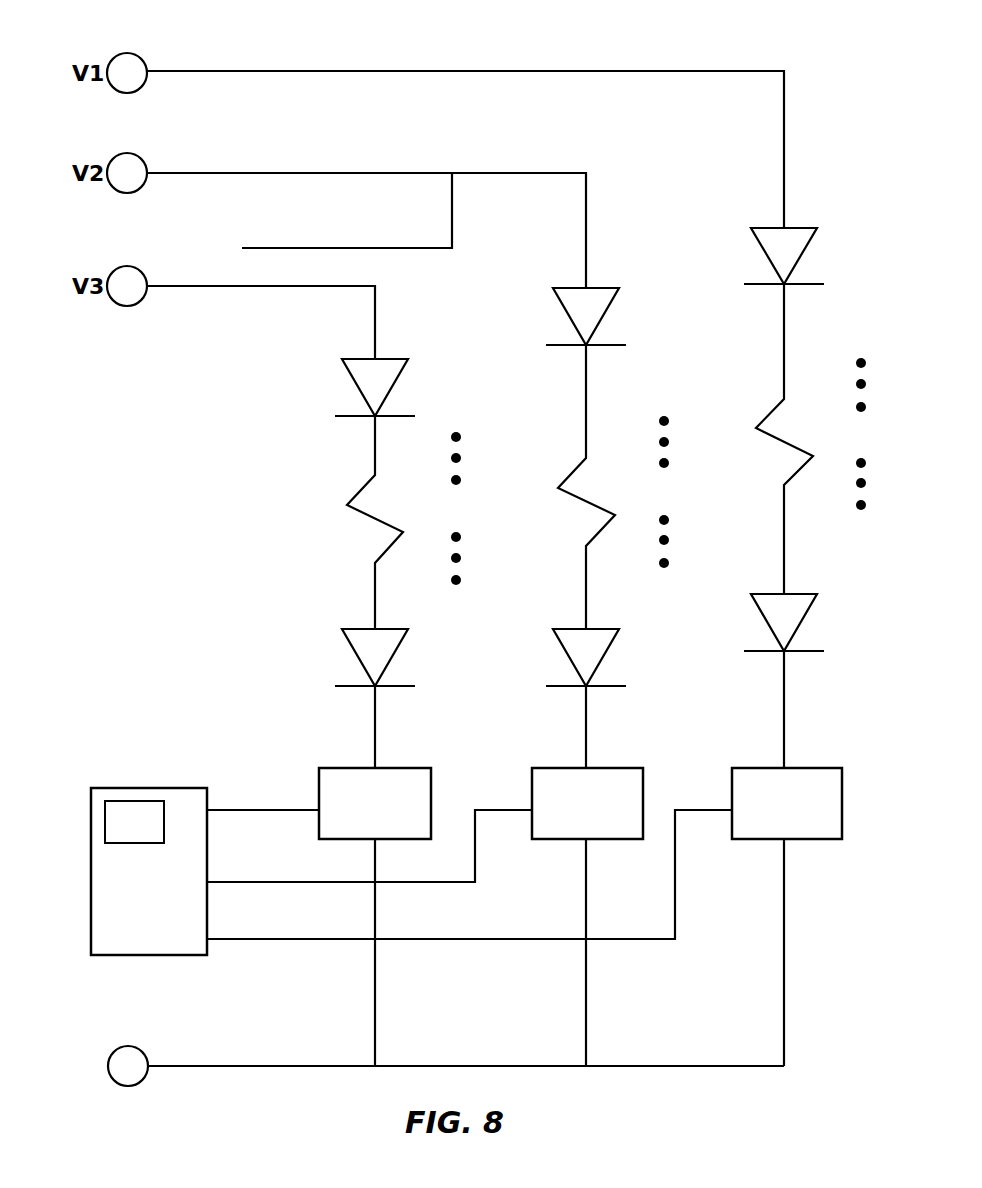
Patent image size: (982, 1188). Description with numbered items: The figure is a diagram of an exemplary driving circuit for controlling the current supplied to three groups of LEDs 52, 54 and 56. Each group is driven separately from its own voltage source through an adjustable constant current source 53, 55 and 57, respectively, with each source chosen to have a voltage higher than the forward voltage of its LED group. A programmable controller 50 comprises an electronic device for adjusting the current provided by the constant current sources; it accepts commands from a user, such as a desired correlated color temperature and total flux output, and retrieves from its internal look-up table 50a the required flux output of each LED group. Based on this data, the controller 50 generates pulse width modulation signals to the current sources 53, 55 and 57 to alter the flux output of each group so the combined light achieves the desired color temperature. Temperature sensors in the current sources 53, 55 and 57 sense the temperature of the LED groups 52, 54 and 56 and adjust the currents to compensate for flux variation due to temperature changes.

The programmable controller 50 is at (156, 788).
The internal look-up table 50a is at (120, 823).
The first group of LEDs 52 is at (402, 522).
The first adjustable constant current source 53 is at (408, 768).
The second group of LEDs 54 is at (612, 487).
The second adjustable constant current source 55 is at (622, 768).
The third group of LEDs 56 is at (809, 439).
The third adjustable constant current source 57 is at (822, 768).